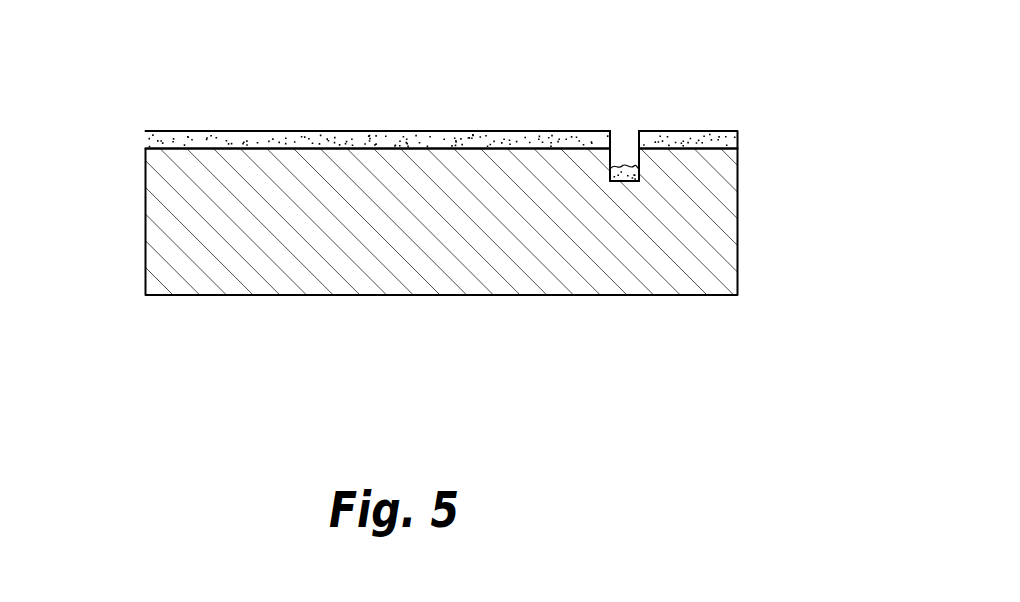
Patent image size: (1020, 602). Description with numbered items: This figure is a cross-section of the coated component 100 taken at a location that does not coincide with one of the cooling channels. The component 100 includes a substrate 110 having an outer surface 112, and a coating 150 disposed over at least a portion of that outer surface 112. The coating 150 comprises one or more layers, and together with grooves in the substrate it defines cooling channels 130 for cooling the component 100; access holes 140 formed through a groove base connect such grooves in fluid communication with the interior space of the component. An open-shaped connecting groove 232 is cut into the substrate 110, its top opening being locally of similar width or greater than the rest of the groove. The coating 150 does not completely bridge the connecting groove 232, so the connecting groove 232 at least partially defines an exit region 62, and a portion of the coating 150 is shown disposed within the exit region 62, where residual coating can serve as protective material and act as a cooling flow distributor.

The component 100 is at (123, 33).
The substrate 110 is at (718, 232).
The outer surface 112 is at (158, 151).
The channel 130 is at (343, 165).
The access hole 140 is at (212, 239).
The coating 150 is at (145, 143).
The exit region 62 is at (624, 140).
The connecting groove 232 is at (641, 151).